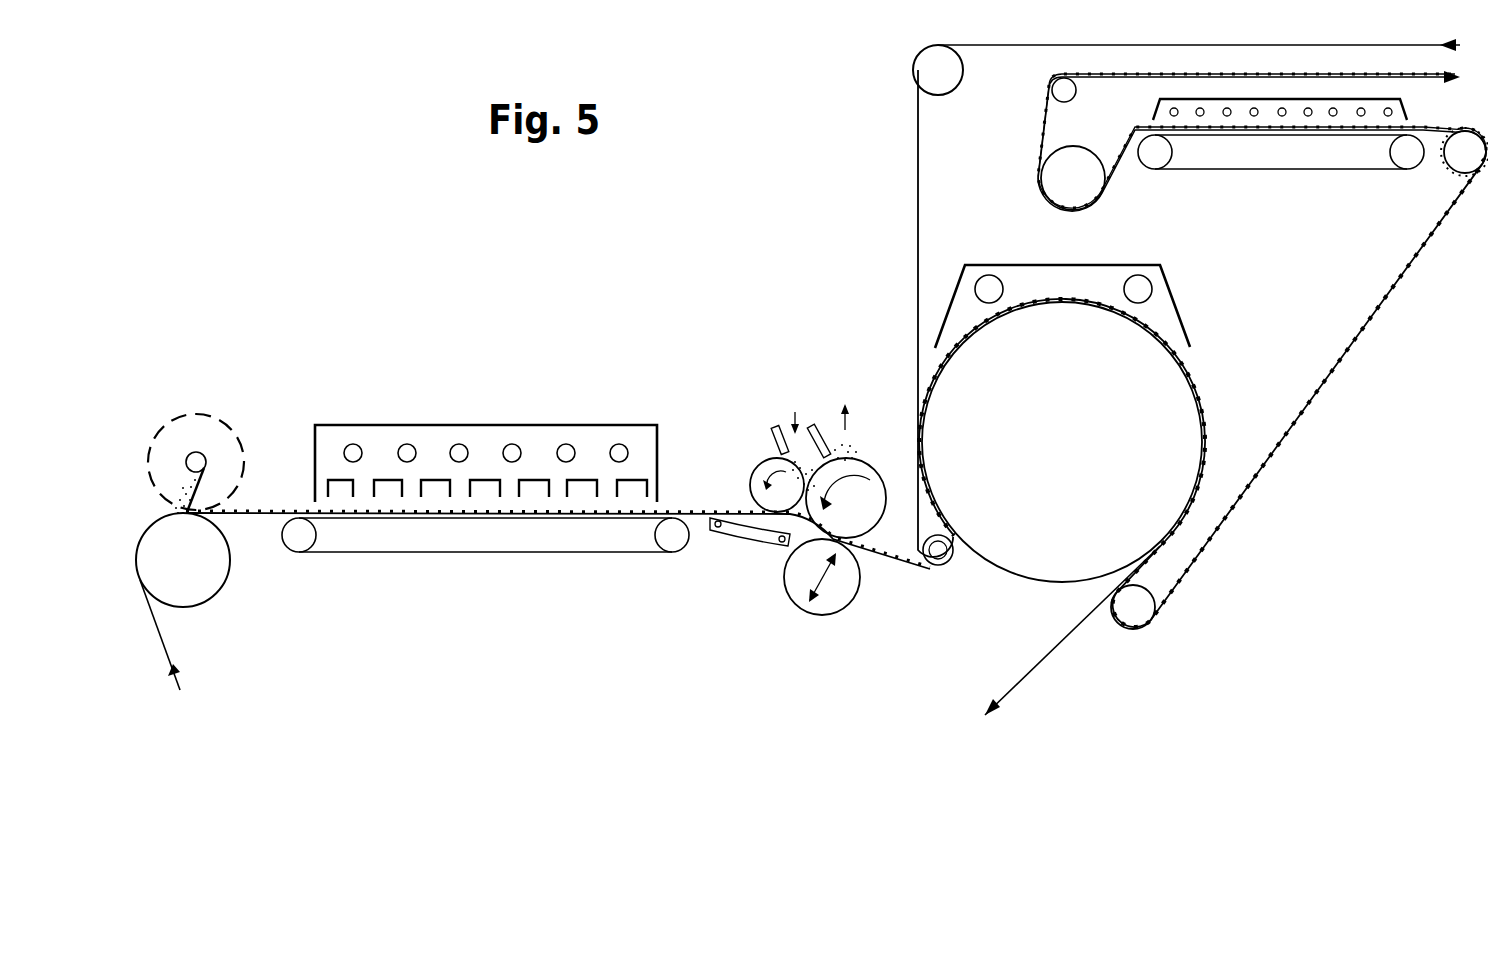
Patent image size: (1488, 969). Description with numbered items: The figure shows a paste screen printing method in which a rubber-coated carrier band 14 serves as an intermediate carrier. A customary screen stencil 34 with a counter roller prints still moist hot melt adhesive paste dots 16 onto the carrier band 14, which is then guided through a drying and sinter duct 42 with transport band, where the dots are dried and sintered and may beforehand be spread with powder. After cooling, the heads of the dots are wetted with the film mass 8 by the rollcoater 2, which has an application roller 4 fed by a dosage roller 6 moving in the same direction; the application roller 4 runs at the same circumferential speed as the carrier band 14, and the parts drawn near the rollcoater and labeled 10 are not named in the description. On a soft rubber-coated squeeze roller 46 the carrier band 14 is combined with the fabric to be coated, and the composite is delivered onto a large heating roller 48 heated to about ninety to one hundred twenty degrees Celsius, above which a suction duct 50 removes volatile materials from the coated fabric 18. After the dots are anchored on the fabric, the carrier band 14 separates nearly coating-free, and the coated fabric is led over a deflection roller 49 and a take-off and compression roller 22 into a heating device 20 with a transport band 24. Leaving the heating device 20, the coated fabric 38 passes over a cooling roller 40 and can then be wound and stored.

The rollcoater 2 is at (804, 450).
The application roller 4 is at (863, 490).
The dosage roller 6 is at (764, 470).
The film 8 is at (810, 457).
The nozzles 10 is at (778, 445).
The carrier band 14 is at (178, 690).
The hot melt adhesive paste dots 16 is at (297, 510).
The coated fabric 18 is at (918, 178).
The heating device 20 is at (1232, 108).
The take-off and compression roller 22 is at (1460, 156).
The transport band 24 is at (1247, 172).
The screen stencil 34 is at (215, 420).
The coated fabric 38 is at (1417, 80).
The cooling roller 40 is at (1072, 160).
The drying and sinter duct 42 is at (485, 445).
The squeeze roller 46 is at (938, 566).
The heating roller 48 is at (1078, 434).
The deflection roller 49 is at (1140, 612).
The suction duct 50 is at (1100, 265).